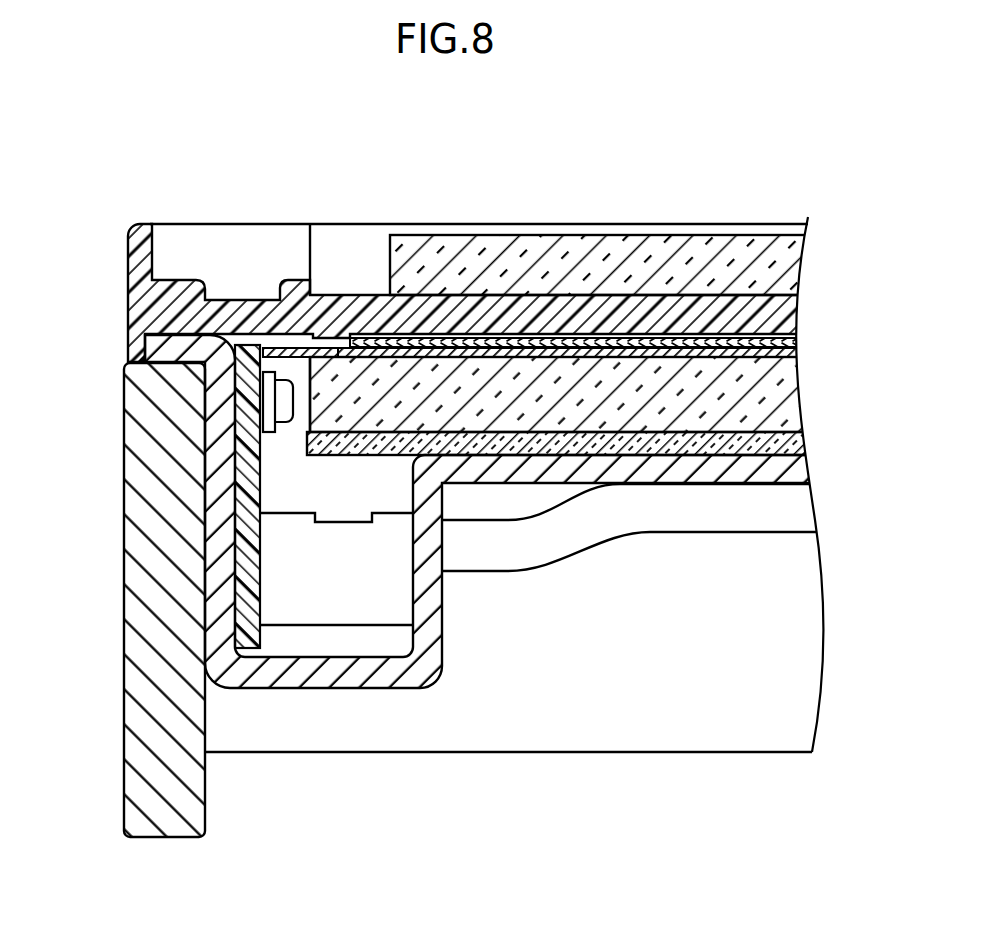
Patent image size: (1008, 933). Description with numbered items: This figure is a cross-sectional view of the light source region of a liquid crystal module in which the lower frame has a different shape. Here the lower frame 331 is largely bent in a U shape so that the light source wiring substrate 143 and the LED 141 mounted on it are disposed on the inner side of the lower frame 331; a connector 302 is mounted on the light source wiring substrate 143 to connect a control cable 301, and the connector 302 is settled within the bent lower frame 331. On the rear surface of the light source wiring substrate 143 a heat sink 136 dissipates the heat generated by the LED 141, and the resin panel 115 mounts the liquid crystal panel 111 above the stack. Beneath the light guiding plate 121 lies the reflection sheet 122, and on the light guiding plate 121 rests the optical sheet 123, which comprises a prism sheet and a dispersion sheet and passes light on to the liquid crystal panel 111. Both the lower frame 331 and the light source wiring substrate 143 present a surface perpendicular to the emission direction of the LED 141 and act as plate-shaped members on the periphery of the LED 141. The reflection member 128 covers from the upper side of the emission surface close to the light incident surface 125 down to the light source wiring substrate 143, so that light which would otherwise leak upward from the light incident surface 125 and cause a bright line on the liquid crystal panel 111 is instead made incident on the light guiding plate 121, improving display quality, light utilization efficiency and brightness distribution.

The liquid crystal panel 111 is at (790, 259).
The resin panel 115 is at (188, 297).
The light guiding plate 121 is at (790, 400).
The reflection sheet 122 is at (797, 441).
The optical sheet 123 is at (805, 322).
The light incident surface 125 is at (309, 388).
The reflection member 128 is at (277, 348).
The heat sink 136 is at (140, 640).
The LED 141 is at (283, 399).
The light source wiring substrate 143 is at (247, 455).
The control cable 301 is at (800, 509).
The connector 302 is at (323, 607).
The lower frame 331 is at (137, 351).